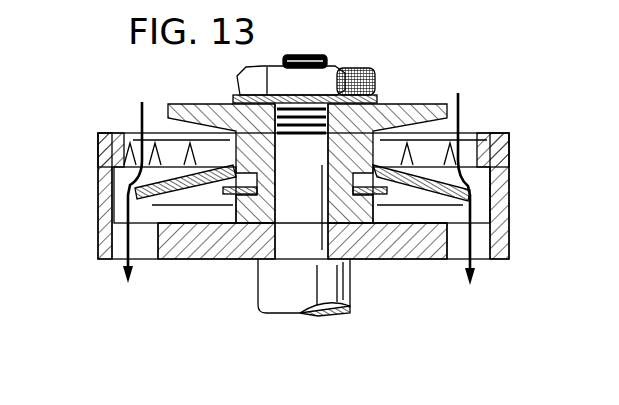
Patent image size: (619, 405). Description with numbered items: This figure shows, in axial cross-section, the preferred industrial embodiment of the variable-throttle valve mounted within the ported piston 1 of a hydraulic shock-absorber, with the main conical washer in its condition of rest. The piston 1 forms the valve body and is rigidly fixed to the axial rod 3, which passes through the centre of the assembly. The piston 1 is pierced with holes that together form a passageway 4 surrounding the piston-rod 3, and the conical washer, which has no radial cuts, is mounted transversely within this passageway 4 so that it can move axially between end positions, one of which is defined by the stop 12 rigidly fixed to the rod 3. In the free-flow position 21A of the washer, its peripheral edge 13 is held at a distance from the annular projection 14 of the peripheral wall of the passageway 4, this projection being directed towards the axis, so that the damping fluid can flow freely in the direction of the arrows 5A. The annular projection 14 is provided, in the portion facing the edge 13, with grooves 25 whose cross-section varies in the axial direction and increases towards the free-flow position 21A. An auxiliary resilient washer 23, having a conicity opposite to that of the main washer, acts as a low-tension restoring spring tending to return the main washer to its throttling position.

The ported piston 1 is at (513, 169).
The axial rod 3 is at (285, 289).
The passageway 4 is at (156, 128).
The arrows 5A is at (124, 273).
The stop 12 is at (413, 125).
The peripheral edge 13 is at (114, 193).
The annular projection 14 is at (484, 148).
The free-flow position 21A is at (168, 198).
The auxiliary resilient washer 23 is at (408, 230).
The grooves 25 is at (466, 152).